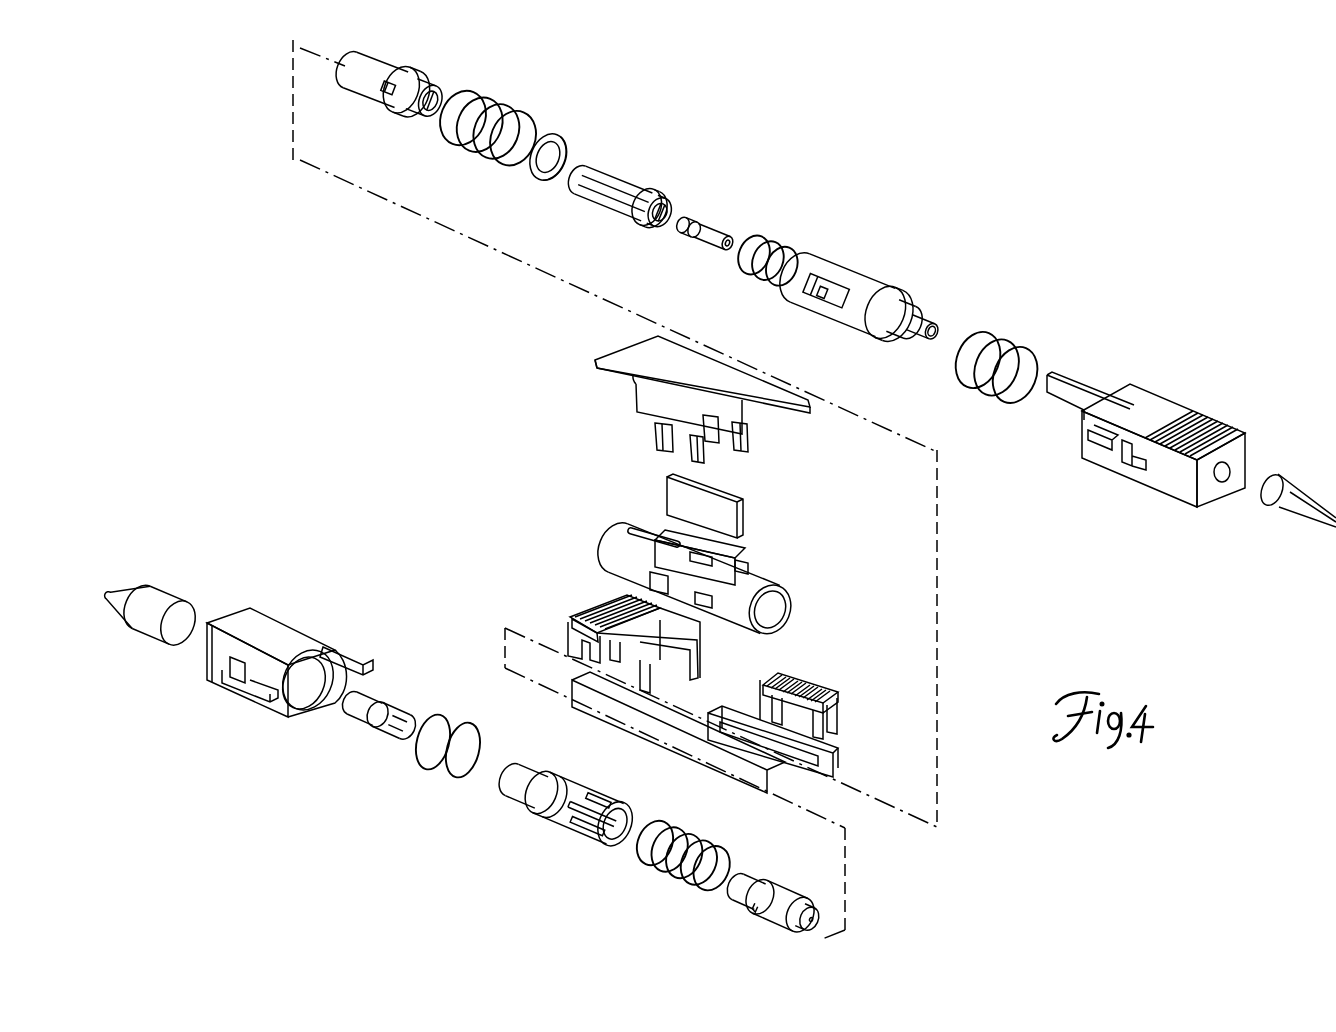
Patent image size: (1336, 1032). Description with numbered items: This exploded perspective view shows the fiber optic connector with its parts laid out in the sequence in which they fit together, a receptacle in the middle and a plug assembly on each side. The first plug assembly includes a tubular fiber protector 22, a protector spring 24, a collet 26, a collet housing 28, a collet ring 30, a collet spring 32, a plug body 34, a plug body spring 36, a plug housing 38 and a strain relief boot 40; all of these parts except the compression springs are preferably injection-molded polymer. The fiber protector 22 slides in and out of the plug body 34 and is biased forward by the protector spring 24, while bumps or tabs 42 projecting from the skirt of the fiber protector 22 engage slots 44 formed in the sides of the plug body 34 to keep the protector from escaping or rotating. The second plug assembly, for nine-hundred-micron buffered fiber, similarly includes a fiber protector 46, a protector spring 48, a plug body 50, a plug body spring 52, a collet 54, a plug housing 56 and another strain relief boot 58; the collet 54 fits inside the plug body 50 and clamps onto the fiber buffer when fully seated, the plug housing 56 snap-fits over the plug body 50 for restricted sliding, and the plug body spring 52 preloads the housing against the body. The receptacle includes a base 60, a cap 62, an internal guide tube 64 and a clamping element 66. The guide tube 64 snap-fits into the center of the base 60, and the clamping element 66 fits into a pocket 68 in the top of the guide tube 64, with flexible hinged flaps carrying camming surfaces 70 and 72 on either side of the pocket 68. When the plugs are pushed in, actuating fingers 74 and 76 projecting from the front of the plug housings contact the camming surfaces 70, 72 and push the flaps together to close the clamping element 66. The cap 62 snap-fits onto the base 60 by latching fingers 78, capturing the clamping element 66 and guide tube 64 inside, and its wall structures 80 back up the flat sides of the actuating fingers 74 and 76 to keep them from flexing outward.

The tubular fiber protector 22 is at (357, 95).
The protector spring 24 is at (467, 147).
The collet 26 is at (712, 238).
The collet housing 28 is at (597, 200).
The collet ring 30 is at (533, 177).
The collet spring 32 is at (750, 275).
The plug body 34 is at (887, 280).
The plug body spring 36 is at (970, 387).
The plug housing 38 is at (1150, 487).
The strain relief boot 40 is at (1300, 517).
The bumps or tabs 42 is at (380, 88).
The slots 44 is at (800, 300).
The fiber protector 46 is at (780, 880).
The protector spring 48 is at (680, 840).
The plug body 50 is at (555, 777).
The plug body spring 52 is at (453, 723).
The collet 54 is at (367, 700).
The plug housing 56 is at (237, 697).
The strain relief boot 58 is at (133, 583).
The base 60 is at (833, 757).
The cap 62 is at (782, 418).
The internal guide tube 64 is at (760, 587).
The clamping element 66 is at (740, 515).
The pocket 68 is at (748, 570).
The camming surface 70 is at (657, 568).
The camming surface 72 is at (667, 532).
The actuating finger 74 is at (1065, 398).
The actuating finger 76 is at (353, 660).
The latching fingers 78 is at (690, 460).
The wall structures 80 is at (705, 440).